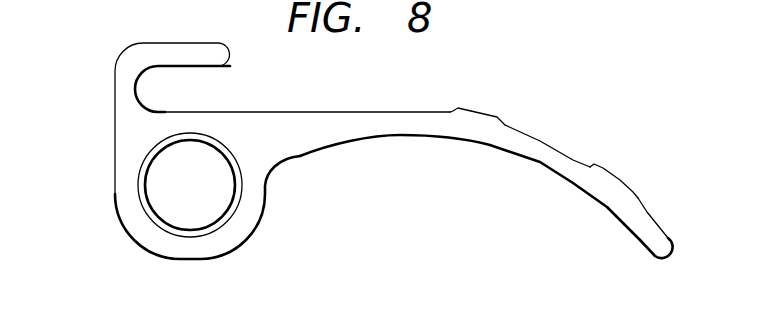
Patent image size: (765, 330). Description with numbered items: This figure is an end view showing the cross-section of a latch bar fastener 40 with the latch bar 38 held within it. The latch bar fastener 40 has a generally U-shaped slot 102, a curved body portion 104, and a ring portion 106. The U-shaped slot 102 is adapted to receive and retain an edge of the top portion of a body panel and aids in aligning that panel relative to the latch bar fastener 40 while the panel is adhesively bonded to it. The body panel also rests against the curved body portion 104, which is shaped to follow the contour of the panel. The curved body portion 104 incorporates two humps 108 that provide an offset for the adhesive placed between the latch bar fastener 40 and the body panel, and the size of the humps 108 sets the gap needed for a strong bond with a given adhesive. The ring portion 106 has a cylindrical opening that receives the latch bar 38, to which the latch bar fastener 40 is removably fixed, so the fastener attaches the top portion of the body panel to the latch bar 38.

The latch bar fastener 40 is at (95, 131).
The U-shaped slot 102 is at (237, 84).
The curved body portion 104 is at (543, 152).
The humps 108 is at (482, 112).
The ring portion 106 is at (182, 236).
The latch bar 38 is at (205, 200).